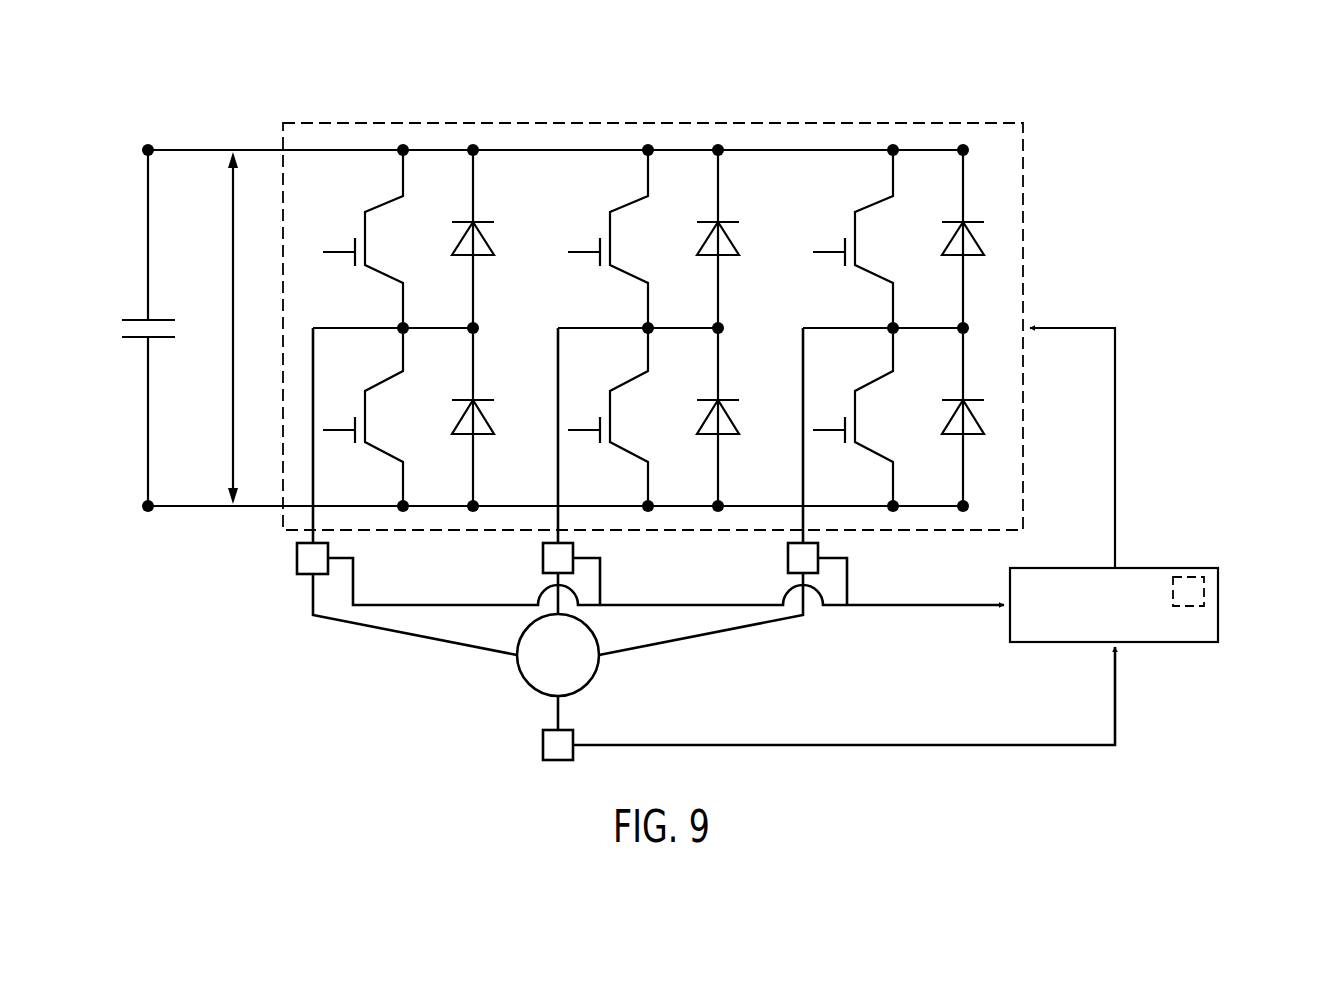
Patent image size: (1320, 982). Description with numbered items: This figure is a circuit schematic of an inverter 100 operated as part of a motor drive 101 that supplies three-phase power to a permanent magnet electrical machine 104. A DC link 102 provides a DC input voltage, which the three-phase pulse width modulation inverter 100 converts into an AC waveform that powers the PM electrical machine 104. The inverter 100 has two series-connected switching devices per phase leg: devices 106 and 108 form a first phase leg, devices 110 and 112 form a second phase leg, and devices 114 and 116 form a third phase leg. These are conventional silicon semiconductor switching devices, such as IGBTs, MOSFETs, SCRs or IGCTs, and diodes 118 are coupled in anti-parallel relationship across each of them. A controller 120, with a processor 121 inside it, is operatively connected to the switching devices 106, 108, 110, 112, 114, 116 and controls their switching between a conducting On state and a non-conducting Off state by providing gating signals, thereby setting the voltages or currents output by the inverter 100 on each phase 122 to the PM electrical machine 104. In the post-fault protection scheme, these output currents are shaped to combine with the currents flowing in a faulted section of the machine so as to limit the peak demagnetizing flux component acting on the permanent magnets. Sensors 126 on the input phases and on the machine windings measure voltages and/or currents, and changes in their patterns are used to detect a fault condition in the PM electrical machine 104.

The inverter 100 is at (966, 118).
The motor drive 101 is at (667, 291).
The DC link 102 is at (175, 100).
The PM electrical machine 104 is at (528, 688).
The switching device 106 is at (390, 200).
The switching device 108 is at (390, 380).
The switching device 110 is at (635, 200).
The switching device 112 is at (635, 380).
The switching device 114 is at (880, 200).
The switching device 116 is at (880, 380).
The diodes 118 is at (484, 240).
The controller 120 is at (1139, 508).
The processor 121 is at (1204, 590).
The phase 122 is at (413, 636).
The sensors 126 is at (297, 560).